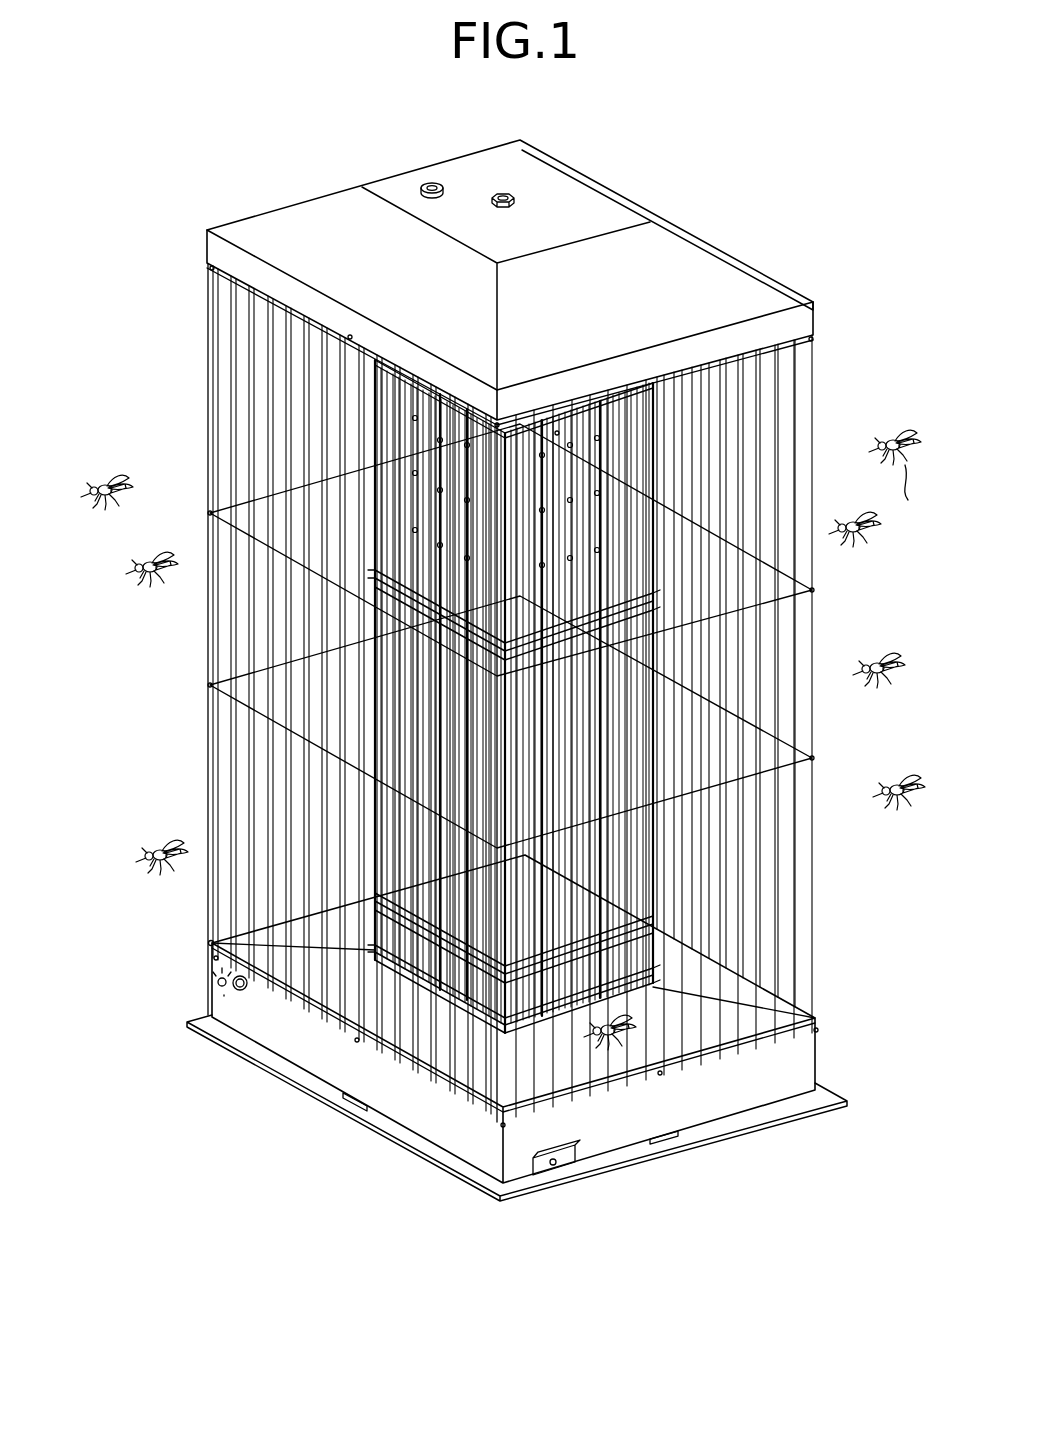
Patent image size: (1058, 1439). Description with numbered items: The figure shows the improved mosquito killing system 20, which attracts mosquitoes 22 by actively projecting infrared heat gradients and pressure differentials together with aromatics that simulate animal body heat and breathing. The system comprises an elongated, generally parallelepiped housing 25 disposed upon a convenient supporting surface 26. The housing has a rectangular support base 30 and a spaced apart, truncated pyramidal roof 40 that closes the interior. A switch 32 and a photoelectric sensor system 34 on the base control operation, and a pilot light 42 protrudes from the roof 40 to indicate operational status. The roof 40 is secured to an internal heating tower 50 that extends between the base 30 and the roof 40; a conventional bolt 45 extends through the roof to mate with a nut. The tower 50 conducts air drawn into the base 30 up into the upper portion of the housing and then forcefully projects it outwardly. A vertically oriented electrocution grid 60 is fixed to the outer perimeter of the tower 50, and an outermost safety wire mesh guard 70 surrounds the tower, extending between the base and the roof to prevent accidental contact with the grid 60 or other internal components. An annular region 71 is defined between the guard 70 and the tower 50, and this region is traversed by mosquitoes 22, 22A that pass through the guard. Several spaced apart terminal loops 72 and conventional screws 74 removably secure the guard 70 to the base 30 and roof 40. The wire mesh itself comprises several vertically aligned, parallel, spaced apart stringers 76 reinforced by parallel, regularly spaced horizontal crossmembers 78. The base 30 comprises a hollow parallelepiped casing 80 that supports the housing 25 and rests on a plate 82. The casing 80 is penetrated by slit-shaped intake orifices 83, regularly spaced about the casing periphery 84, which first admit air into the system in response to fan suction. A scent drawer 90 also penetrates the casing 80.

The mosquito killing system 20 is at (827, 194).
The mosquitoes 22 is at (140, 567).
The mosquito 22A is at (616, 1060).
The housing 25 is at (826, 665).
The supporting surface 26 is at (770, 1150).
The support base 30 is at (422, 1164).
The switch 32 is at (216, 982).
The photoelectric sensor system 34 is at (243, 992).
The truncated pyramidal roof 40 is at (630, 193).
The pilot light 42 is at (430, 182).
The bolt 45 is at (512, 197).
The internal heating tower 50 is at (557, 437).
The electrocution grid 60 is at (436, 410).
The safety wire mesh guard 70 is at (833, 923).
The annular region 71 is at (790, 885).
The terminal loops 72 is at (350, 336).
The screws 74 is at (354, 333).
The stringers 76 is at (282, 302).
The horizontal crossmembers 78 is at (207, 265).
The casing 80 is at (297, 1053).
The plate 82 is at (393, 1137).
The intake orifices 83 is at (348, 1100).
The casing periphery 84 is at (747, 1087).
The scent drawer 90 is at (565, 1160).